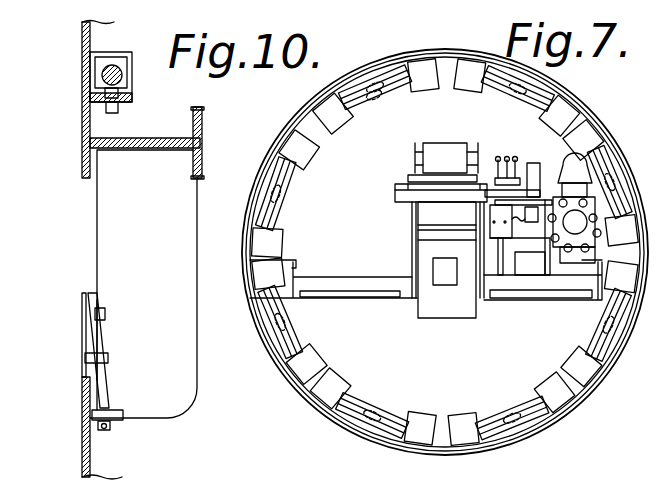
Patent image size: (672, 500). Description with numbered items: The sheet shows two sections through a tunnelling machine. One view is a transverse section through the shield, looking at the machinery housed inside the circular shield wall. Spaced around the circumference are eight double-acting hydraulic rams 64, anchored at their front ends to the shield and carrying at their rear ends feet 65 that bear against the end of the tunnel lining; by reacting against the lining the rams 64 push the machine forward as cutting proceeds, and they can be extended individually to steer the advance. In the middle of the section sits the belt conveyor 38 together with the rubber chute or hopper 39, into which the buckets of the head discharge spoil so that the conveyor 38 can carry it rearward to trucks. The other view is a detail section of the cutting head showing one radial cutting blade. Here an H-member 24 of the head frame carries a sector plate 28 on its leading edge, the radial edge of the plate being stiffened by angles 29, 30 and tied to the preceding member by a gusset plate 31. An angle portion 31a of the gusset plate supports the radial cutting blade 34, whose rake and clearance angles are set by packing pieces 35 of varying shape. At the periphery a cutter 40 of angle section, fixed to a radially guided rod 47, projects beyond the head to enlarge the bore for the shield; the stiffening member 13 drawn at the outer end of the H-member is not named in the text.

In FIG. 10, the flange channel 13 is at (198, 220).
In FIG. 10, the H-member 24 is at (153, 143).
In FIG. 10, the sector plate 28 is at (82, 142).
In FIG. 10, the angle 29 is at (117, 422).
In FIG. 10, the angle 30 is at (86, 408).
In FIG. 10, the gusset plate 31 is at (190, 356).
In FIG. 10, the angle portion 31a is at (100, 334).
In FIG. 10, the radial cutting blade 34 is at (84, 295).
In FIG. 10, the packing piece 35 is at (95, 297).
In FIG. 7, the belt conveyor 38 is at (437, 138).
In FIG. 7, the chute 39 is at (463, 134).
In FIG. 10, the cutter 40 is at (128, 72).
In FIG. 10, the rod 47 is at (112, 66).
In FIG. 7, the hydraulic ram 64 is at (375, 100).
In FIG. 7, the foot 65 is at (255, 210).